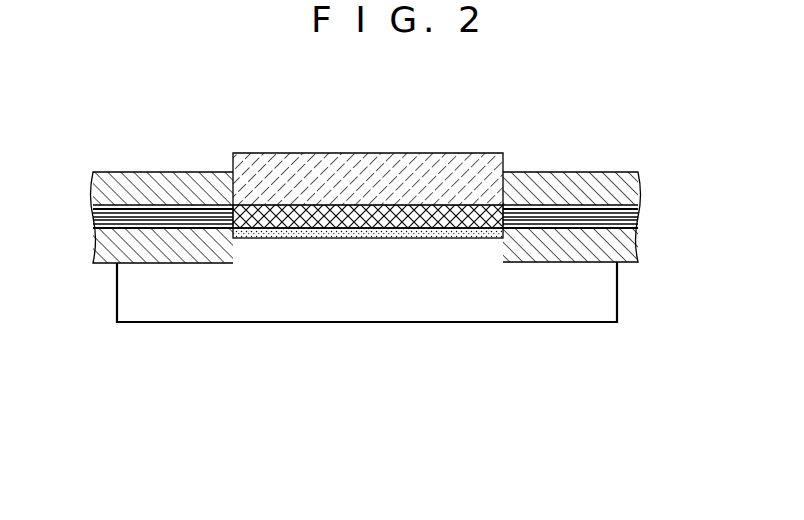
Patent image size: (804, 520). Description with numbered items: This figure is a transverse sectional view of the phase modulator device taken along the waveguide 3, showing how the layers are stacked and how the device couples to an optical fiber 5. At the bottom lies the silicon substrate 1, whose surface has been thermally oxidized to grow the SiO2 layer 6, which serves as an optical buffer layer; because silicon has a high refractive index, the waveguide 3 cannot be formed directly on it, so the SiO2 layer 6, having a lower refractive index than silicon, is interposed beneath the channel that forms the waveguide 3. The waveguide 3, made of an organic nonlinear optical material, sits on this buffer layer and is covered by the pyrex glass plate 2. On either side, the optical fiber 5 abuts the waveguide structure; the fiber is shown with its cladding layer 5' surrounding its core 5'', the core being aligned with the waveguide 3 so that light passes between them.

The silicon substrate 1 is at (475, 308).
The pyrex glass plate 2 is at (401, 166).
The waveguide 3 is at (306, 208).
The optical fiber 5 is at (388, 171).
The cladding layer 5' is at (570, 142).
The core 5'' is at (570, 157).
The SiO2 layer 6 is at (370, 238).